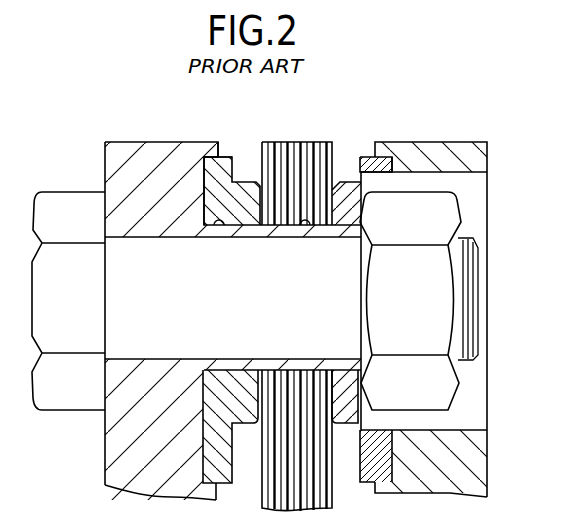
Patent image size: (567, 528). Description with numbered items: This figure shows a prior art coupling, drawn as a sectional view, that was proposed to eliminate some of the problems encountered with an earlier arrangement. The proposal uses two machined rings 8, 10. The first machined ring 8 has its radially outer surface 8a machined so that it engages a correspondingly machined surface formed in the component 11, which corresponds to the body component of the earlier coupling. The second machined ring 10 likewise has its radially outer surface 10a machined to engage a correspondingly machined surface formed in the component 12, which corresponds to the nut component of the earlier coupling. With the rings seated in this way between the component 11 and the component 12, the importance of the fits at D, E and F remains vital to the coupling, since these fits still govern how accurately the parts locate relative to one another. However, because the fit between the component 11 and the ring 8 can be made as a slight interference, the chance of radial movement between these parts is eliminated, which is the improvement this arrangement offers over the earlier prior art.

The component 11 is at (146, 162).
The machined ring 8 is at (226, 158).
The radially outer surface 8a is at (190, 165).
The fit F is at (222, 155).
The fit D is at (221, 229).
The fit E is at (306, 229).
The machined ring 10 is at (367, 158).
The radially outer surface 10a is at (389, 158).
The component 12 is at (465, 160).